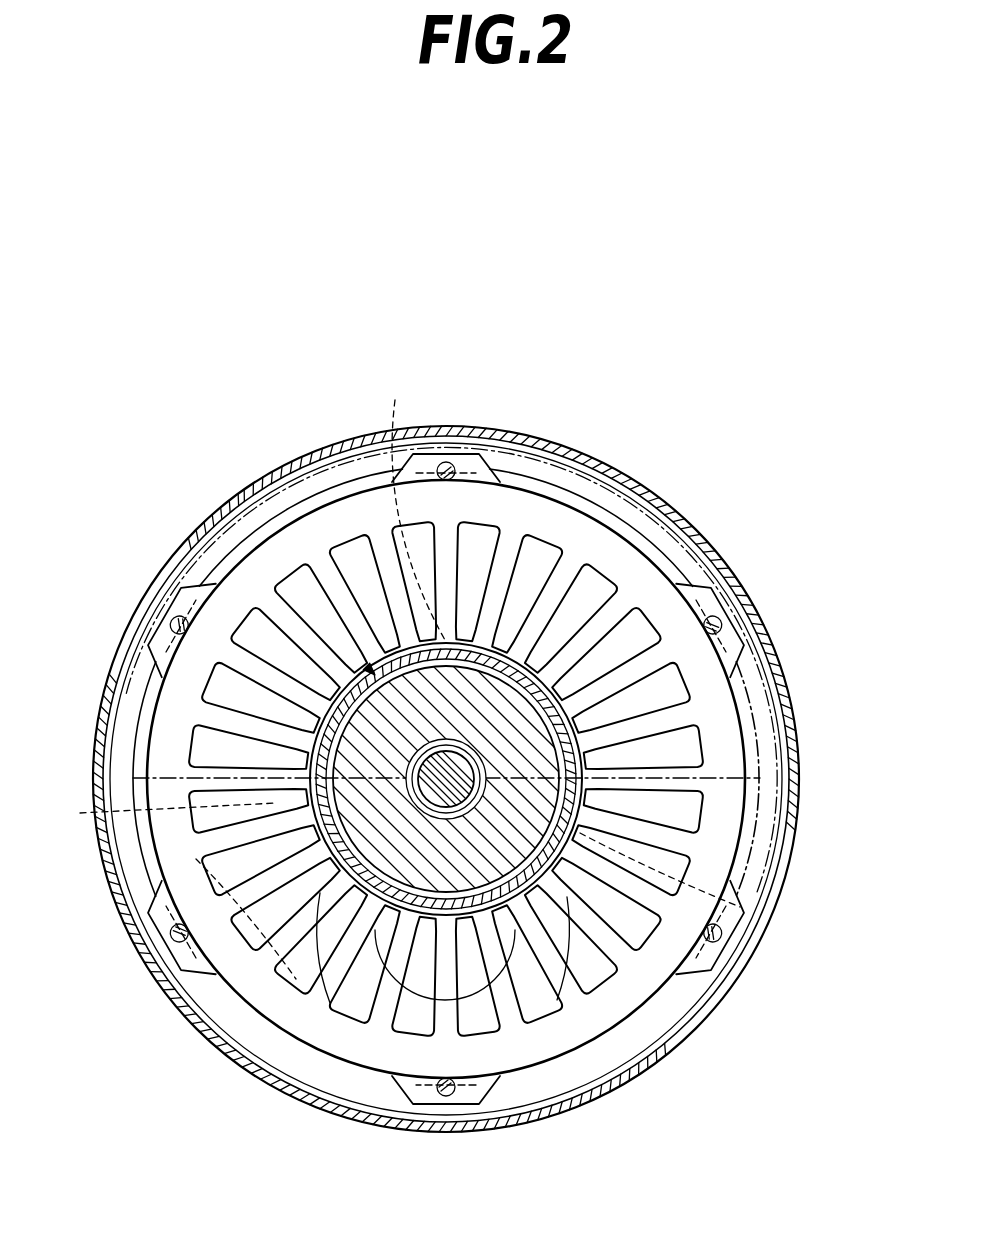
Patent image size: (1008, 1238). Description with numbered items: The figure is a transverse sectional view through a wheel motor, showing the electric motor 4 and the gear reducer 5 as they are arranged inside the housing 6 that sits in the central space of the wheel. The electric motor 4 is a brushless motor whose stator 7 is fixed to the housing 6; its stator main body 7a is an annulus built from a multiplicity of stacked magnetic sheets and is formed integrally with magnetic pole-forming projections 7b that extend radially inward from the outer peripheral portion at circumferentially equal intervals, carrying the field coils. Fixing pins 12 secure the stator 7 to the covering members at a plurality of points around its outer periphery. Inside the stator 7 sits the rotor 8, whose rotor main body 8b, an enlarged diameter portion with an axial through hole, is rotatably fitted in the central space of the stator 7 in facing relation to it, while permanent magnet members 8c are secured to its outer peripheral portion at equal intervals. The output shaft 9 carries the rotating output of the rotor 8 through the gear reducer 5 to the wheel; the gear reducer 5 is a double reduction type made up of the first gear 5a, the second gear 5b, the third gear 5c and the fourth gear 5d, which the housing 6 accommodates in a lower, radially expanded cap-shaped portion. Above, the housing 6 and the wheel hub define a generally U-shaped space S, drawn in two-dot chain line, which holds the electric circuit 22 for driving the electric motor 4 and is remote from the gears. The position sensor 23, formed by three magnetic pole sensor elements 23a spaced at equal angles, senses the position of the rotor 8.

The electric motor 4 is at (738, 688).
The gear reducer 5 is at (487, 831).
The first gear 5a is at (600, 945).
The second gear 5b is at (610, 1038).
The third gear 5c is at (205, 1035).
The fourth gear 5d is at (205, 585).
The housing 6 is at (511, 424).
The stator 7 is at (525, 731).
The stator main body 7a is at (615, 550).
The magnetic pole-forming projections 7b is at (615, 628).
The rotor 8 is at (489, 638).
The rotor main body 8b is at (693, 758).
The permanent magnet members 8c is at (725, 715).
The output shaft 9 is at (700, 830).
The fixing pins 12 is at (438, 1096).
The electric circuit 22 is at (280, 475).
The position sensor 23 is at (303, 896).
The magnetic pole sensor elements 23a is at (790, 912).
The space S is at (793, 858).